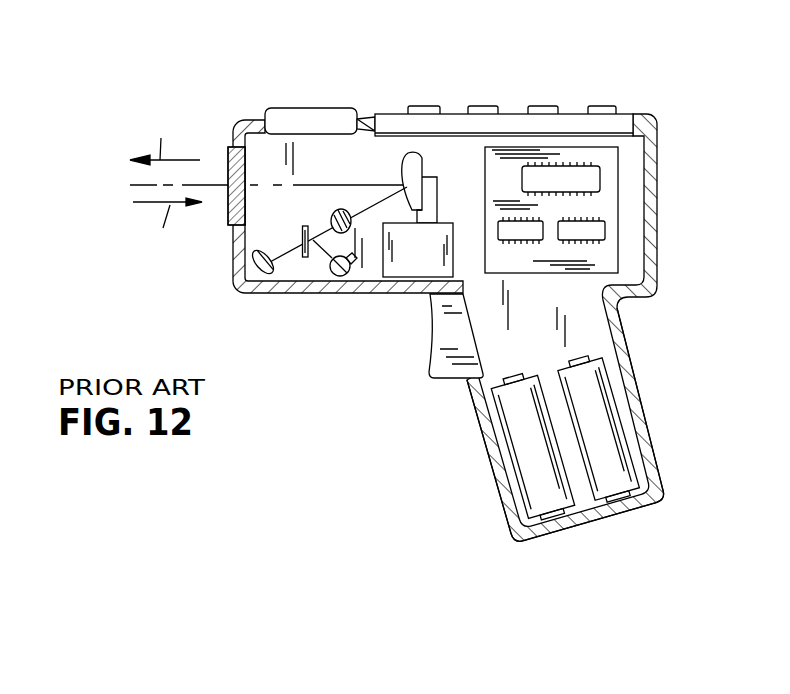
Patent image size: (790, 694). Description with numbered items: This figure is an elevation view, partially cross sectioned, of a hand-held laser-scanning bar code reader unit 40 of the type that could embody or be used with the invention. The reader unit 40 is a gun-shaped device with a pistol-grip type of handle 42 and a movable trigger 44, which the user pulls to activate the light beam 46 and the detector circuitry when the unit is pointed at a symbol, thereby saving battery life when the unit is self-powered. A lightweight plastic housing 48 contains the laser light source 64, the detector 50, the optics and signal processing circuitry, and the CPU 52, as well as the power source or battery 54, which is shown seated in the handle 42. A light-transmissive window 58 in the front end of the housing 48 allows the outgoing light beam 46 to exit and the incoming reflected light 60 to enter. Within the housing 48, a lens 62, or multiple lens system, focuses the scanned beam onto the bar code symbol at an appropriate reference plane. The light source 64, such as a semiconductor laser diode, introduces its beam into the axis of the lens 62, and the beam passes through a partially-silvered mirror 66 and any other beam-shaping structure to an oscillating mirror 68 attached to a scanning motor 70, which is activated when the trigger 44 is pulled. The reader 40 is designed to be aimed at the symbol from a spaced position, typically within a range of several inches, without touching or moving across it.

The reader unit 40 is at (324, 421).
The pistol-grip handle 42 is at (490, 462).
The trigger 44 is at (432, 368).
The light beam 46 is at (268, 146).
The housing 48 is at (659, 228).
The detector 50 is at (350, 270).
The CPU 52 is at (530, 172).
The battery 54 is at (600, 358).
The light-transmissive window 58 is at (231, 152).
The incoming reflected light 60 is at (167, 228).
The lens 62 is at (333, 213).
The light source 64 is at (253, 263).
The partially-silvered mirror 66 is at (305, 260).
The oscillating mirror 68 is at (423, 162).
The scanning motor 70 is at (425, 268).